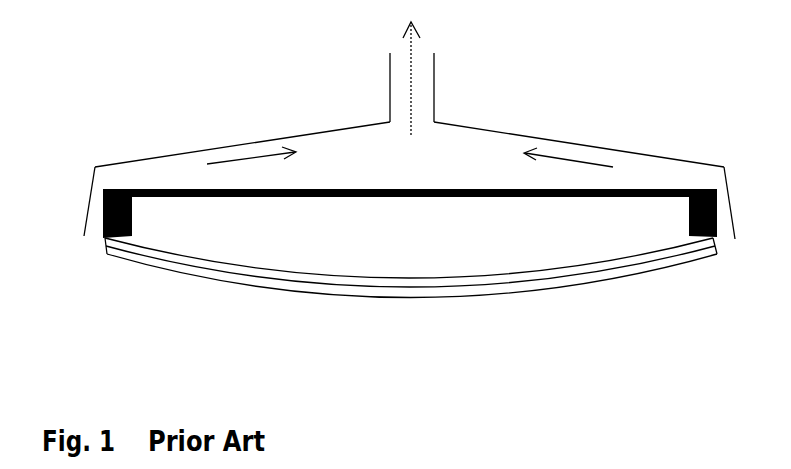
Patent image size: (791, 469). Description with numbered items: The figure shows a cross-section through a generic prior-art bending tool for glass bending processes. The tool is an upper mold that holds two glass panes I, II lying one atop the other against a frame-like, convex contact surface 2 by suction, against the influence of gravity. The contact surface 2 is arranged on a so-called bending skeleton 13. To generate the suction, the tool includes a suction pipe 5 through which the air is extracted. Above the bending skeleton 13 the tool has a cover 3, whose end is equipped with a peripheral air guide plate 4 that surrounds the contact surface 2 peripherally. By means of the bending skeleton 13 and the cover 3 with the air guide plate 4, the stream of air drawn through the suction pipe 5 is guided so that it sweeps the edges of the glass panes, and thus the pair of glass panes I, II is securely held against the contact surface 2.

The contact surface 2 is at (103, 228).
The cover 3 is at (213, 143).
The air guide plate 4 is at (83, 195).
The suction pipe 5 is at (387, 75).
The bending skeleton 13 is at (443, 188).
The glass pane I is at (185, 260).
The glass pane II is at (207, 275).